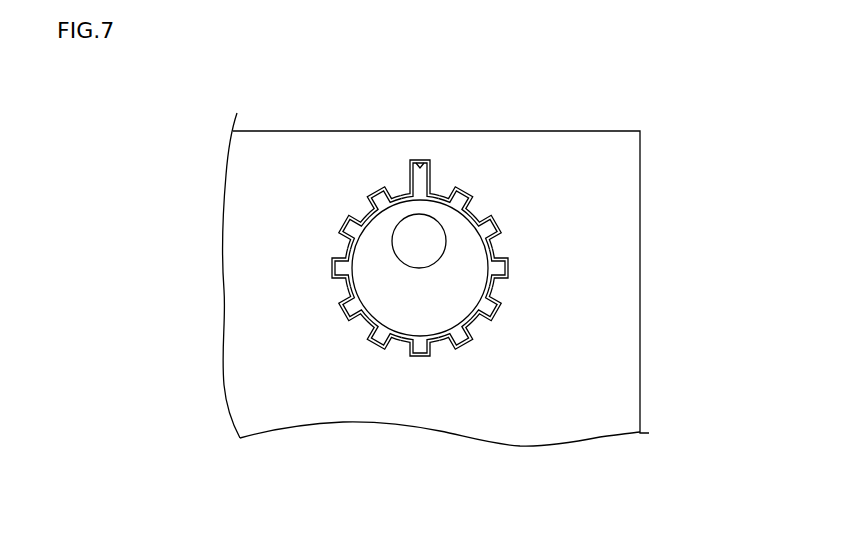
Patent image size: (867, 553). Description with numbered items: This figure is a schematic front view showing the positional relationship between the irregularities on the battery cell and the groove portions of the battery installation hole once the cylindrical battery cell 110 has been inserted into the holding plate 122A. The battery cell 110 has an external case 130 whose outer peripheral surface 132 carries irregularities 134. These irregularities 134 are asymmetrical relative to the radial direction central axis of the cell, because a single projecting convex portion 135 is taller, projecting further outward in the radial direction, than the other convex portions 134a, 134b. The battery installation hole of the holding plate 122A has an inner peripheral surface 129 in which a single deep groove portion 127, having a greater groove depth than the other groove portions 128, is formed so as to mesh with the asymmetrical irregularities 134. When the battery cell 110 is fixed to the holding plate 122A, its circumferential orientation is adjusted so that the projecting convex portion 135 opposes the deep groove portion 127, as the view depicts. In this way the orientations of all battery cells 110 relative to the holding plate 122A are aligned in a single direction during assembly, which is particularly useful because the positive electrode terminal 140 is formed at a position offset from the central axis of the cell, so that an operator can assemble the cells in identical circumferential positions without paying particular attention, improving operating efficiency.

The holding plate 122A is at (597, 131).
The battery cell 110 is at (379, 292).
The positive electrode terminal 140 is at (418, 243).
The deep groove portion 127 is at (420, 162).
The projecting convex portion 135 is at (421, 178).
The inner peripheral surface 129 is at (379, 207).
The convex portions 134a is at (478, 230).
The second projection 134b is at (492, 256).
The irregularities 134 is at (730, 158).
The groove portions 128 is at (502, 258).
The external case 130 is at (457, 340).
The outer peripheral surface 132 is at (456, 347).